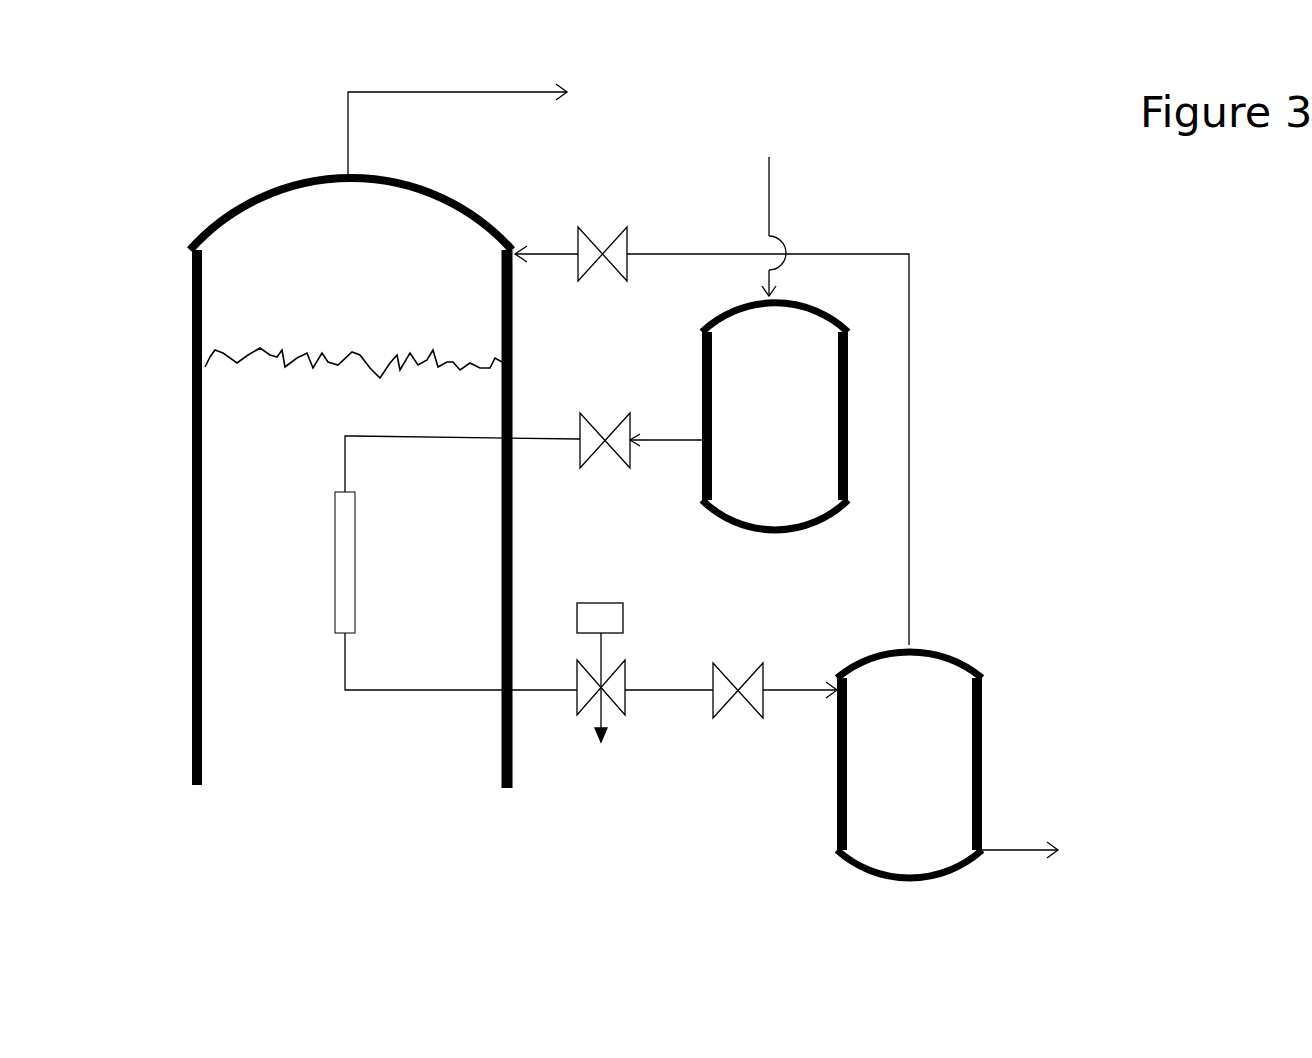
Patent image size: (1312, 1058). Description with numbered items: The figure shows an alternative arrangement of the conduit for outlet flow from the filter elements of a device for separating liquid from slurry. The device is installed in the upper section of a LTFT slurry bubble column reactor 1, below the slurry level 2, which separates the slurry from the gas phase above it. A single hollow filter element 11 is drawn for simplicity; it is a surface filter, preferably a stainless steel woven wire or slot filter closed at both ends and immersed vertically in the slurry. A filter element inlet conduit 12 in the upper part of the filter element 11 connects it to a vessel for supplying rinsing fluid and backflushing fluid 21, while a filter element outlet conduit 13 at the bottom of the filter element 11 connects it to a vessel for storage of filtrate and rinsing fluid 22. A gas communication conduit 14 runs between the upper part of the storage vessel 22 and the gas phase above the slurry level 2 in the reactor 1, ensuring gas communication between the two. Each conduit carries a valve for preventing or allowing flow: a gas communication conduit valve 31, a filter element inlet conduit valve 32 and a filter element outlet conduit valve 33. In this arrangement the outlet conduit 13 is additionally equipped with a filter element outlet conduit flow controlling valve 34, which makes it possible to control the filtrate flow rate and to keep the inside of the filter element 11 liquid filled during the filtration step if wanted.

The LTFT slurry bubble column reactor 1 is at (351, 483).
The slurry level 2 is at (353, 344).
The filter element 11 is at (367, 562).
The filter element inlet conduit 12 is at (523, 463).
The filter element outlet conduit 13 is at (591, 665).
The gas communication conduit 14 is at (712, 429).
The vessel for supplying rinsing fluid and backflushing fluid 21 is at (775, 416).
The vessel for storage of filtrate and rinsing fluid 22 is at (909, 765).
The gas communication conduit valve 31 is at (604, 224).
The filter element inlet conduit valve 32 is at (605, 415).
The filter element outlet conduit valve 33 is at (738, 669).
The filter element outlet conduit flow controlling valve 34 is at (601, 648).